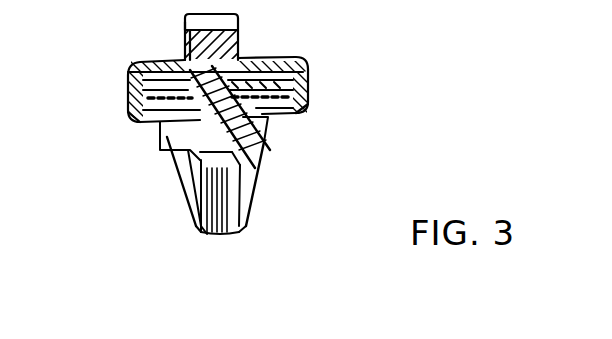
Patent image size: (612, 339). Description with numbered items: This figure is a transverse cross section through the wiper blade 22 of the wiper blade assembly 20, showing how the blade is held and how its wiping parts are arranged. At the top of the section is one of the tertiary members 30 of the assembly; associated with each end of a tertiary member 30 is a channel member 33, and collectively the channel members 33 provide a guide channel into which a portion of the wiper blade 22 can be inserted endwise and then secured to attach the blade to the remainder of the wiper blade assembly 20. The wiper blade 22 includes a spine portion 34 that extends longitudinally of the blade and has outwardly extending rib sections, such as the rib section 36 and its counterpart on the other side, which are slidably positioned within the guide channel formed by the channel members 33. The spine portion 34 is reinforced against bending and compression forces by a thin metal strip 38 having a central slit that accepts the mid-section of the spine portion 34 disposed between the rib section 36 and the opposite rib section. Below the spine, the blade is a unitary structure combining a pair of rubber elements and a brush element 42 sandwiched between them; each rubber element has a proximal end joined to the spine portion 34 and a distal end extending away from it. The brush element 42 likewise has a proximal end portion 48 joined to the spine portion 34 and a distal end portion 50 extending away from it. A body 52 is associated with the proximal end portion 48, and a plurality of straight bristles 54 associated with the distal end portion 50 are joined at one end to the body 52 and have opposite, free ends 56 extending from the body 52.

The valve assembly 20 is at (183, 22).
The tertiary member 30 is at (241, 40).
The spine portion 34 is at (248, 57).
The rib section 36 is at (129, 80).
The thin metal strip 38 is at (303, 71).
The channel member 33 is at (308, 95).
The wiper blade 22 is at (262, 128).
The body 52 is at (250, 188).
The proximal end portion 48 is at (193, 187).
The brush element 42 is at (207, 237).
The distal end portion 50 is at (230, 237).
The straight bristles 54 is at (227, 233).
The free ends 56 is at (213, 233).